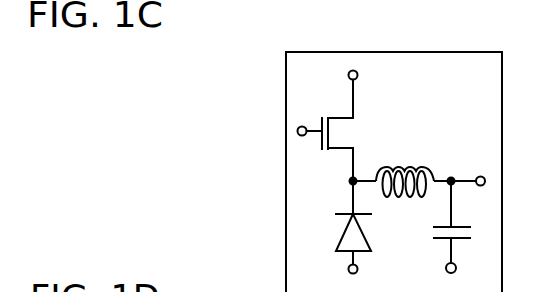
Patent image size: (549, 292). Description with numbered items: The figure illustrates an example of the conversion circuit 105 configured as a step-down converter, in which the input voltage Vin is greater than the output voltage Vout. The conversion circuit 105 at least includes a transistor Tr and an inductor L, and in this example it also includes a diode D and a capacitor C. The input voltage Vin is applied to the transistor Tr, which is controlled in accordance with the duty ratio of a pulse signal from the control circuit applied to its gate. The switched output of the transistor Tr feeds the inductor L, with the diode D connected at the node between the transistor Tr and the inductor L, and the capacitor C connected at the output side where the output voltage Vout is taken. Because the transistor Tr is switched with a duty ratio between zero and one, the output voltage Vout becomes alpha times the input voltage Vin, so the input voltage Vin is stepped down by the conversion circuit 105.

The conversion circuit 105 is at (393, 157).
The input voltage Vin is at (360, 91).
The transistor Tr is at (340, 149).
The inductor L is at (405, 167).
The output voltage Vout is at (469, 169).
The capacitor C is at (441, 227).
The diode D is at (344, 227).